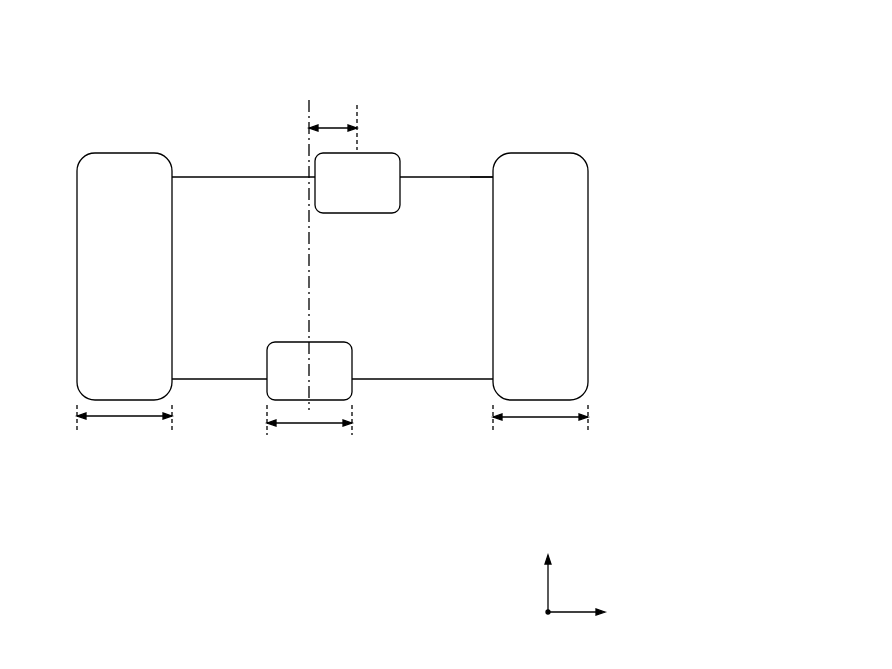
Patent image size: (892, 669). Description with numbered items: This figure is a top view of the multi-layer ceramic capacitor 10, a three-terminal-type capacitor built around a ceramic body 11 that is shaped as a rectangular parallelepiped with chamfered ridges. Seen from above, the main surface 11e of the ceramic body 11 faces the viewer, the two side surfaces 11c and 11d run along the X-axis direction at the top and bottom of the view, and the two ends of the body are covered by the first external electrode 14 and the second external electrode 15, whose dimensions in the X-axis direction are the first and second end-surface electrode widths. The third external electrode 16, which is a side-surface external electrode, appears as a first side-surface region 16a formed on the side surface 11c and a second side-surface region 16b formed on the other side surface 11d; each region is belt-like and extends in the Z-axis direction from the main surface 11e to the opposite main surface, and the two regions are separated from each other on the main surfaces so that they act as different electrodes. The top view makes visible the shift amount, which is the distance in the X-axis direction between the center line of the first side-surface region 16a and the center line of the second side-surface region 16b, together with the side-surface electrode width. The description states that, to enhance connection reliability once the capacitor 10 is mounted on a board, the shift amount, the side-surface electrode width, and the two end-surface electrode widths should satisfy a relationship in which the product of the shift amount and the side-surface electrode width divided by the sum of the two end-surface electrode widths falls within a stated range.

The multi-layer ceramic capacitor 10 is at (108, 63).
The ceramic body 11 is at (348, 260).
The side surface 11c is at (416, 176).
The side surface 11d is at (403, 381).
The main surface 11e is at (476, 193).
The first external electrode 14 is at (78, 173).
The second external electrode 15 is at (586, 172).
The third external electrode 16 is at (292, 261).
The first side-surface region 16a is at (385, 170).
The second side-surface region 16b is at (277, 400).